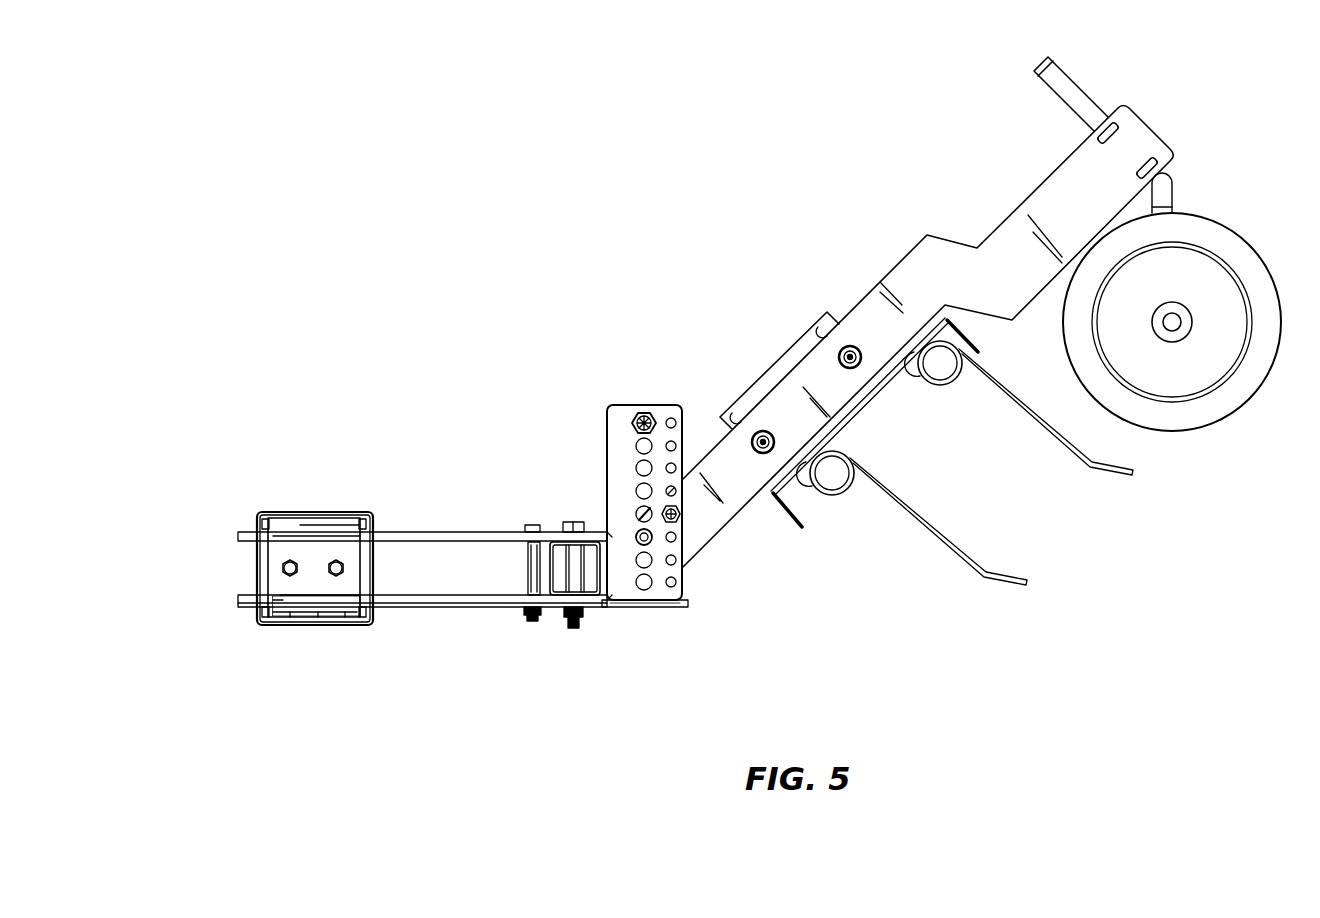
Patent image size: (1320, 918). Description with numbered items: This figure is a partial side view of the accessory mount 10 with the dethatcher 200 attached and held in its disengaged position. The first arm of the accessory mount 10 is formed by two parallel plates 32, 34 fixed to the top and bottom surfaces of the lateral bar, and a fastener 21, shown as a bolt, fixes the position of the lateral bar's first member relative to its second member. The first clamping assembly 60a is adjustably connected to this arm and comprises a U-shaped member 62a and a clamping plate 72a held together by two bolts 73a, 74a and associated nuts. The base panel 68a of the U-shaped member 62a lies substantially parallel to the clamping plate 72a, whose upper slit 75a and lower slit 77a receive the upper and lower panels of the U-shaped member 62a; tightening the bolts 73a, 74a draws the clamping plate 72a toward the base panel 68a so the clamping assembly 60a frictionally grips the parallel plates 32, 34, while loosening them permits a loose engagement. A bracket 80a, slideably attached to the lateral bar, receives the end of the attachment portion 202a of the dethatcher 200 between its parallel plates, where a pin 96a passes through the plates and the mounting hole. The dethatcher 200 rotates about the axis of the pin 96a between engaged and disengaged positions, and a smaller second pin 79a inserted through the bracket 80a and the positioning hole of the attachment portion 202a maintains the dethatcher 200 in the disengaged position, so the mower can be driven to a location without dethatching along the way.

The accessory mount 10 is at (367, 248).
The fastener 21 is at (573, 521).
The parallel plate 32 is at (468, 530).
The parallel plate 34 is at (460, 608).
The first clamping assembly 60a is at (238, 650).
The U-shaped member 62a is at (298, 600).
The base panel 68a is at (277, 583).
The clamping plate 72a is at (369, 511).
The bolt 73a is at (282, 563).
The bolt 74a is at (336, 558).
The upper slit 75a is at (257, 525).
The lower slit 77a is at (255, 613).
The pin 79a is at (682, 518).
The bracket 80a is at (680, 607).
The pin 96a is at (640, 543).
The dethatcher 200 is at (791, 283).
The attachment portion 202a is at (717, 437).